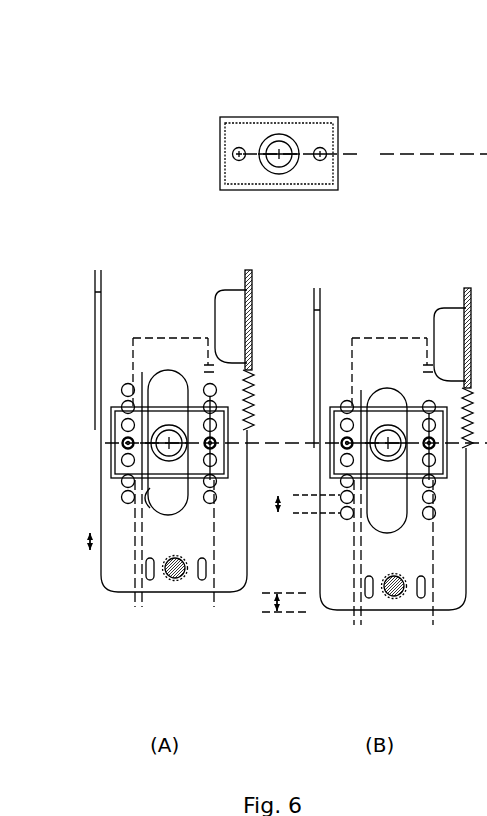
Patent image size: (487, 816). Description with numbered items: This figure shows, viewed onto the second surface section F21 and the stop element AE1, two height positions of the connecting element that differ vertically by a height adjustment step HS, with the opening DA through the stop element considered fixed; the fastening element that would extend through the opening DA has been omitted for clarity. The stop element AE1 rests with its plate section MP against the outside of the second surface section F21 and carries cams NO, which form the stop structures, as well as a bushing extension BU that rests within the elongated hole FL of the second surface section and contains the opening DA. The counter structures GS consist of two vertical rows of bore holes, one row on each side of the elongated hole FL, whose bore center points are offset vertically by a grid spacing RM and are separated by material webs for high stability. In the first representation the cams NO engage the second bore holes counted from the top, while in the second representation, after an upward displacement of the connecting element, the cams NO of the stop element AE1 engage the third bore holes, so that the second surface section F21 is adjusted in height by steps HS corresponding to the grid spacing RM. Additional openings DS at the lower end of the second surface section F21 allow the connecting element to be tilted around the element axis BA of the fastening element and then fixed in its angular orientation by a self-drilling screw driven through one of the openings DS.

The stop element AE1 is at (207, 161).
The opening DA is at (278, 135).
The element axis BA is at (280, 153).
The plate section MP is at (318, 137).
The cams NO is at (318, 159).
The second surface section F21 is at (108, 372).
The bushing extension BU is at (158, 432).
The counter structures GS is at (122, 486).
The elongated hole FL is at (160, 515).
The additional openings DS is at (175, 581).
The grid spacing RM is at (309, 504).
The height adjustment step HS is at (279, 602).